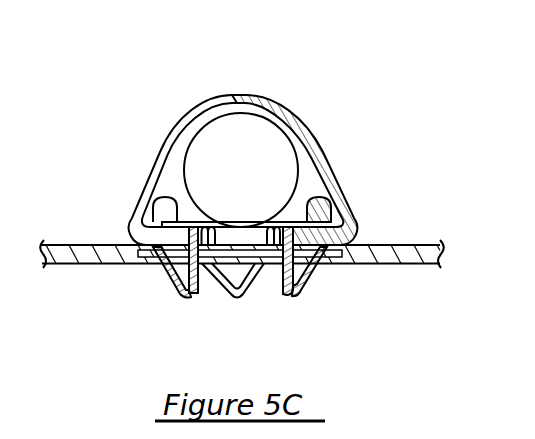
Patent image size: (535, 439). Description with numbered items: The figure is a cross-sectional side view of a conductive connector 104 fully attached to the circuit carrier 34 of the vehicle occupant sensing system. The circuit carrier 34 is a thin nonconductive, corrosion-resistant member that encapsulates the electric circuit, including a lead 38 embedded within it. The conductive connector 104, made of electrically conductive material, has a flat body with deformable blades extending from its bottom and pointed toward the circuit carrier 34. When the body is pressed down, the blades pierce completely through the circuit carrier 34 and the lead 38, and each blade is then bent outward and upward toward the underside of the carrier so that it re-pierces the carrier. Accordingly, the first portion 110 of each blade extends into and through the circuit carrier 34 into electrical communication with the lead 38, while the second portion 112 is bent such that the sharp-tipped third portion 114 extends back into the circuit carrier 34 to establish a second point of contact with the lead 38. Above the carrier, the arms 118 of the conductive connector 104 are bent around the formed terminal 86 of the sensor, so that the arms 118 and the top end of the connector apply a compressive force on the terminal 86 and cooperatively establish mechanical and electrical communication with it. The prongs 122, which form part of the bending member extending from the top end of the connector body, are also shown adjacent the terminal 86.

The circuit carrier 34 is at (410, 252).
The lead 38 is at (213, 263).
The terminal 86 is at (257, 140).
The conductive connector 104 is at (240, 136).
The first portion 110 is at (277, 268).
The second portion 112 is at (307, 272).
The third portion 114 is at (323, 268).
The arm 118 is at (162, 161).
The prong 122 is at (170, 190).